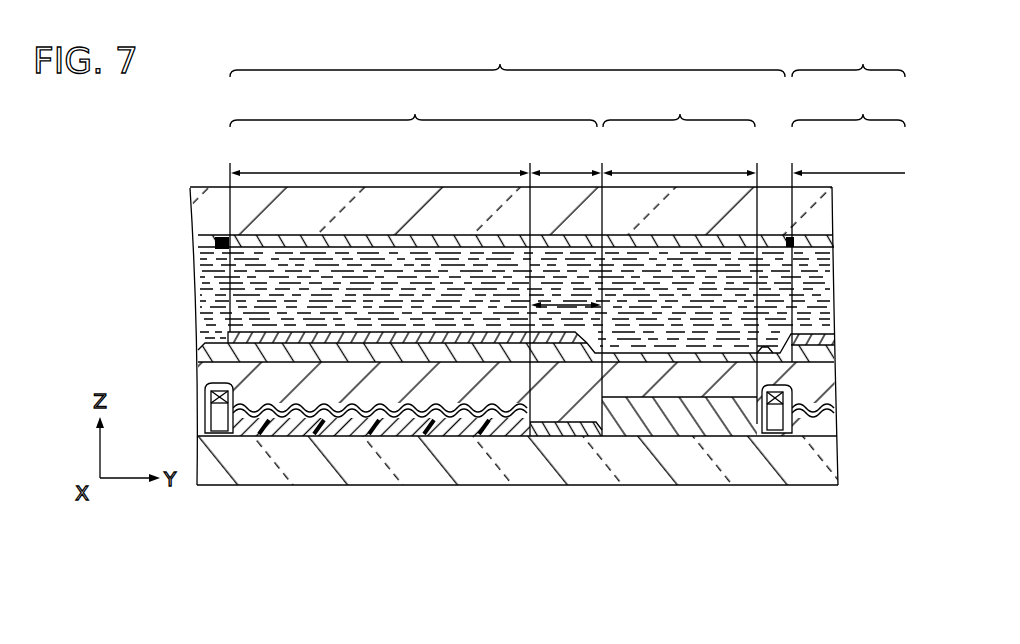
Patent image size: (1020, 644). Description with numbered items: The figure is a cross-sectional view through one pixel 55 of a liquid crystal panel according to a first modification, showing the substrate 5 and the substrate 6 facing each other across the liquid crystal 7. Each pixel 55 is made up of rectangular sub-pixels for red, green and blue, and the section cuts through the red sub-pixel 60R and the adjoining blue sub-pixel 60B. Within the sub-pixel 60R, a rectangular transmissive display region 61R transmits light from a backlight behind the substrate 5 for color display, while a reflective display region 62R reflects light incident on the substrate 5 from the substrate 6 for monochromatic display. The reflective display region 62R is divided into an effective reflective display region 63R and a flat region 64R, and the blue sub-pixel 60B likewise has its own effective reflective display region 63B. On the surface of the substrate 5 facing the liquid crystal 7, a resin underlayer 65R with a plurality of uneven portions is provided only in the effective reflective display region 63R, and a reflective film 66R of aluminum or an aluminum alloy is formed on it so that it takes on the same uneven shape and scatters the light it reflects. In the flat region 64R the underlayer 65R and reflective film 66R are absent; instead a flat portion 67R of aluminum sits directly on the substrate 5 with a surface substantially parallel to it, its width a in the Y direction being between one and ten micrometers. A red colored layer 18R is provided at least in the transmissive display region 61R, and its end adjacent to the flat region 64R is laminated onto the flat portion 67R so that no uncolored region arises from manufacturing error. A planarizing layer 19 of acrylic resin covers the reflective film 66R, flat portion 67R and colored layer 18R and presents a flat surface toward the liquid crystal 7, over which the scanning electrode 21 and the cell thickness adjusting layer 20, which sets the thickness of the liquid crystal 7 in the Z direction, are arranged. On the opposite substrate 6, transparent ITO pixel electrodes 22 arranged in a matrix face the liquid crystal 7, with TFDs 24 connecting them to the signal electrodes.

The pixel 55 is at (163, 172).
The substrate 5 is at (218, 476).
The substrate 6 is at (210, 207).
The liquid crystal 7 is at (198, 273).
The TFD 24 is at (265, 243).
The pixel electrode 22 is at (348, 243).
The scanning electrode 21 is at (411, 345).
The cell thickness adjusting layer 20 is at (507, 347).
The planarizing layer 19 is at (462, 388).
The colored layer 18R is at (627, 412).
The underlayer 65R is at (301, 428).
The reflective film 66R is at (388, 438).
The flat portion 67R is at (558, 433).
The sub-pixel 60R is at (507, 57).
The sub-pixel 60B is at (848, 57).
The transmissive display region 61R is at (679, 134).
The reflective display region 62R is at (413, 109).
The effective reflective display region 63R is at (380, 161).
The flat region 64R is at (566, 161).
The effective reflective display region 63B is at (849, 161).
The width of the flat portion a is at (566, 292).